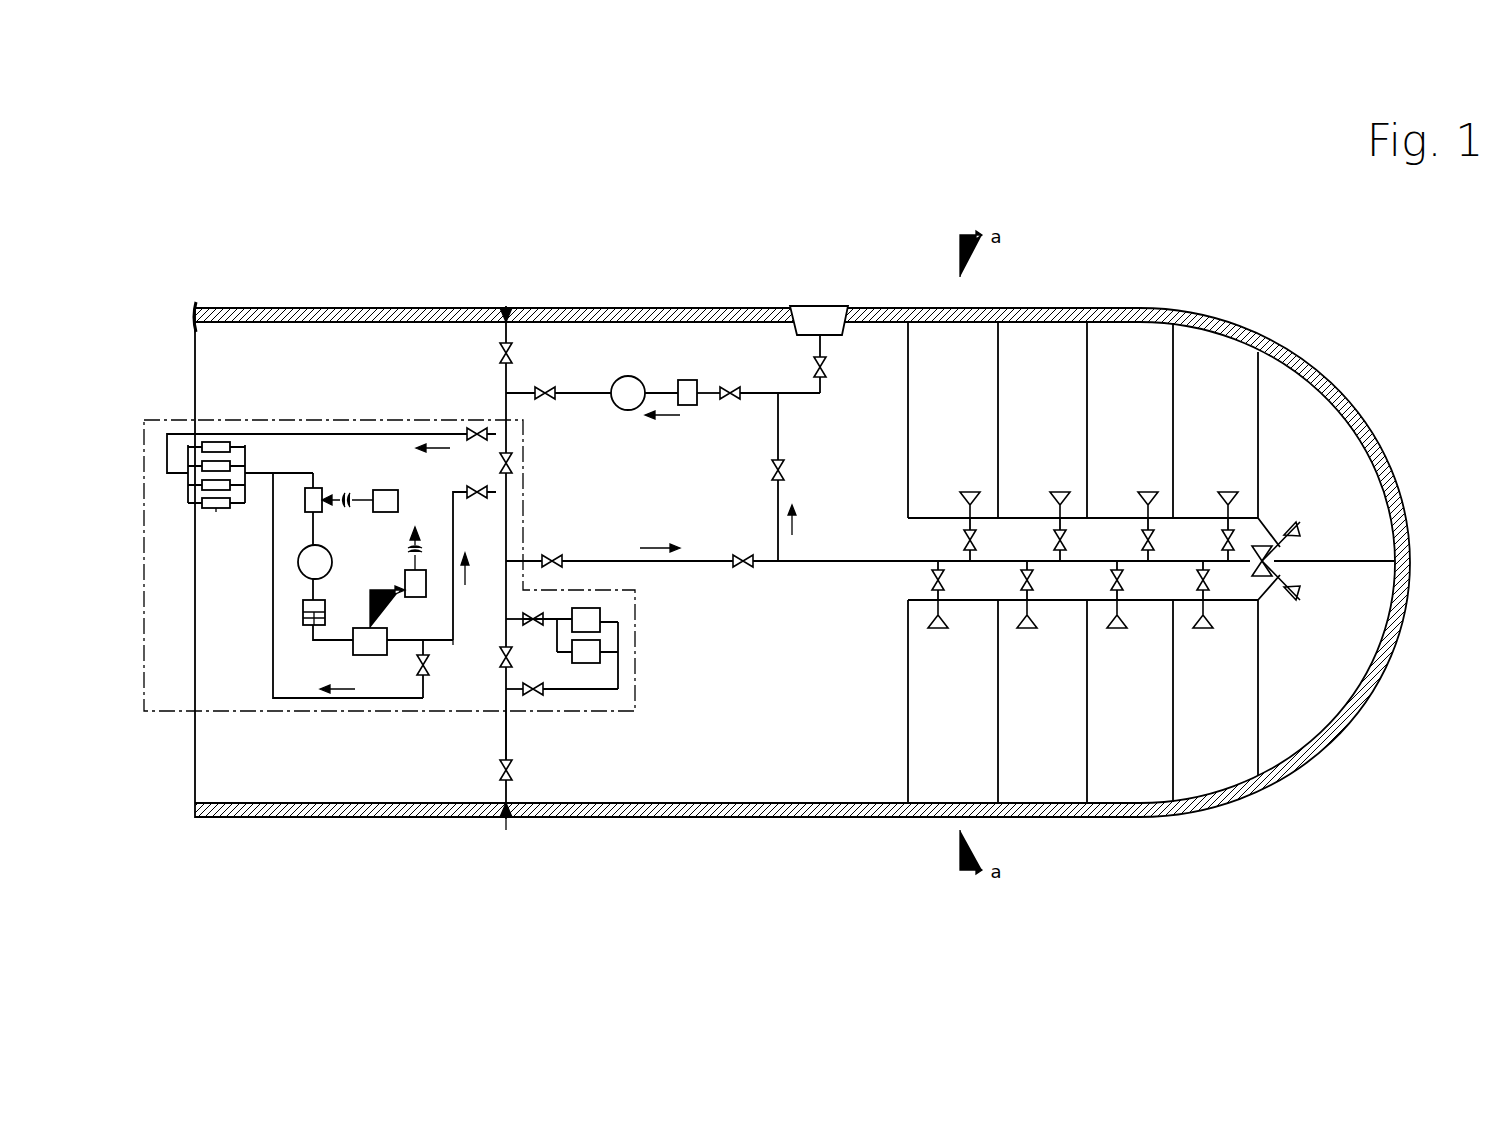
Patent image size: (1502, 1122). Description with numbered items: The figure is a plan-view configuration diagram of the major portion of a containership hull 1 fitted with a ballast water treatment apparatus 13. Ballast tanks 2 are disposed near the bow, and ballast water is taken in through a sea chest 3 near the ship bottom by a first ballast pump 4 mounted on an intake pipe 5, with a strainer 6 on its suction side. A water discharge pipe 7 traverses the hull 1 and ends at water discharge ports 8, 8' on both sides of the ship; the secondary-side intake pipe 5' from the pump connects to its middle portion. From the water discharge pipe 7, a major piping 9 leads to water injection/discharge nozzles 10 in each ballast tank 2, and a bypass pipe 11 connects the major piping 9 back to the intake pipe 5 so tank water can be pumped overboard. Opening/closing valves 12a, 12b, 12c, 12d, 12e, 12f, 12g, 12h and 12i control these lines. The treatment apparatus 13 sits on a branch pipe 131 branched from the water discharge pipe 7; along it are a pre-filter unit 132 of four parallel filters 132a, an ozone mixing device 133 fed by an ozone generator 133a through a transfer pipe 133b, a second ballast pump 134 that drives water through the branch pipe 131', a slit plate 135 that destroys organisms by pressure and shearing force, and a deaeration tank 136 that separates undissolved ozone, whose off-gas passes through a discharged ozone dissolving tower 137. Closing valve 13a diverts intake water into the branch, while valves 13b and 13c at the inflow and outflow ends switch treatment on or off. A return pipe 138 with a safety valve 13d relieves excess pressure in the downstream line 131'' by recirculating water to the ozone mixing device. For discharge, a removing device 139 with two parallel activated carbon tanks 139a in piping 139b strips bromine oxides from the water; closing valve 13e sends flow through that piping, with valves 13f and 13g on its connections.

The hull 1 is at (660, 308).
The ballast tank 2 is at (1331, 666).
The sea chest 3 is at (822, 310).
The ballast pump 4 is at (633, 376).
The intake pipe 5 is at (780, 367).
The intake pipe 5' is at (593, 418).
The strainer 6 is at (690, 380).
The water discharge pipe 7 is at (505, 730).
The water discharge port 8 is at (507, 540).
The water discharge port 8' is at (514, 843).
The major piping 9 is at (840, 565).
The water injection/discharge nozzle 10 is at (1304, 594).
The bypass pipe 11 is at (780, 425).
The opening/closing valve 12a is at (828, 368).
The opening/closing valve 12b is at (734, 398).
The opening/closing valve 12c is at (547, 392).
The opening/closing valve 12d is at (497, 354).
The opening/closing valve 12e is at (554, 554).
The opening/closing valve 12f is at (743, 557).
The opening/closing valve 12g is at (514, 770).
The opening/closing valve 12h is at (1272, 563).
The opening/closing valve 12i is at (786, 470).
The treatment apparatus 13 is at (204, 648).
The opening/closing valve 13a is at (514, 465).
The opening/closing valve 13b is at (470, 430).
The opening/closing valve 13c is at (482, 506).
The safety valve 13d is at (417, 666).
The opening/closing valve 13e is at (499, 666).
The opening/closing valve 13f is at (536, 608).
The opening/closing valve 13g is at (537, 696).
The branch pipe 131 is at (331, 430).
The branch pipe 131' is at (295, 456).
The line 131'' is at (467, 669).
The pre-filter unit 132 is at (262, 441).
The filter 132a is at (213, 512).
The ozone mixing device 133 is at (322, 490).
The ozone generator 133a is at (398, 502).
The transfer pipe 133b is at (346, 503).
The ballast pump 134 is at (332, 556).
The slit plate 135 is at (324, 608).
The deaeration tank 136 is at (353, 646).
The discharged ozone dissolving tower 137 is at (418, 598).
The return pipe 138 is at (272, 584).
The removing device 139 is at (648, 683).
The activated carbon tank 139a is at (622, 638).
The piping 139b is at (595, 692).